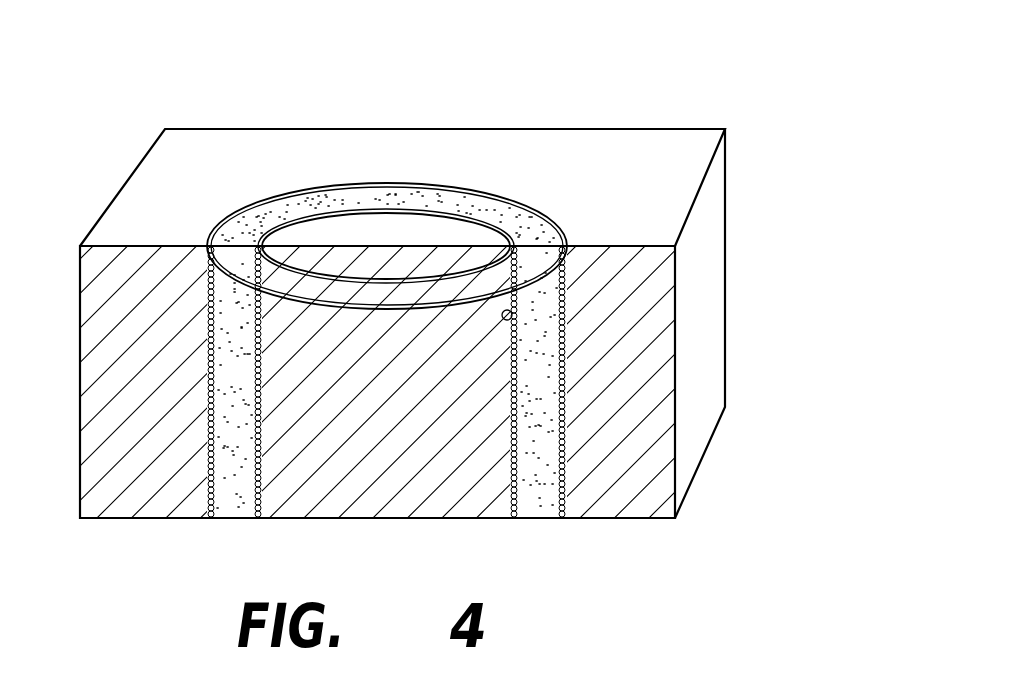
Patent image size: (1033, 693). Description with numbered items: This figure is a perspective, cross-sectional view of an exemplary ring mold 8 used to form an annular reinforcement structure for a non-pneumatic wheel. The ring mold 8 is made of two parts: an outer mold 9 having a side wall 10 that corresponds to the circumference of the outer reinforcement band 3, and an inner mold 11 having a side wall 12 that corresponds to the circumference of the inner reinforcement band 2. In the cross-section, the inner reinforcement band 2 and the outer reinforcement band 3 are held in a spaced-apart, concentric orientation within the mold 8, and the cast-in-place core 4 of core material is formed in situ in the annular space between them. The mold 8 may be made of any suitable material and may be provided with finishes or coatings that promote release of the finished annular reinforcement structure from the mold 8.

The inner reinforcement band 2 is at (213, 320).
The outer reinforcement band 3 is at (207, 367).
The cast-in-place core 4 is at (240, 422).
The ring mold 8 is at (580, 86).
The outer mold 9 is at (650, 145).
The side wall 10 is at (567, 407).
The inner mold 11 is at (383, 230).
The side wall 12 is at (511, 318).